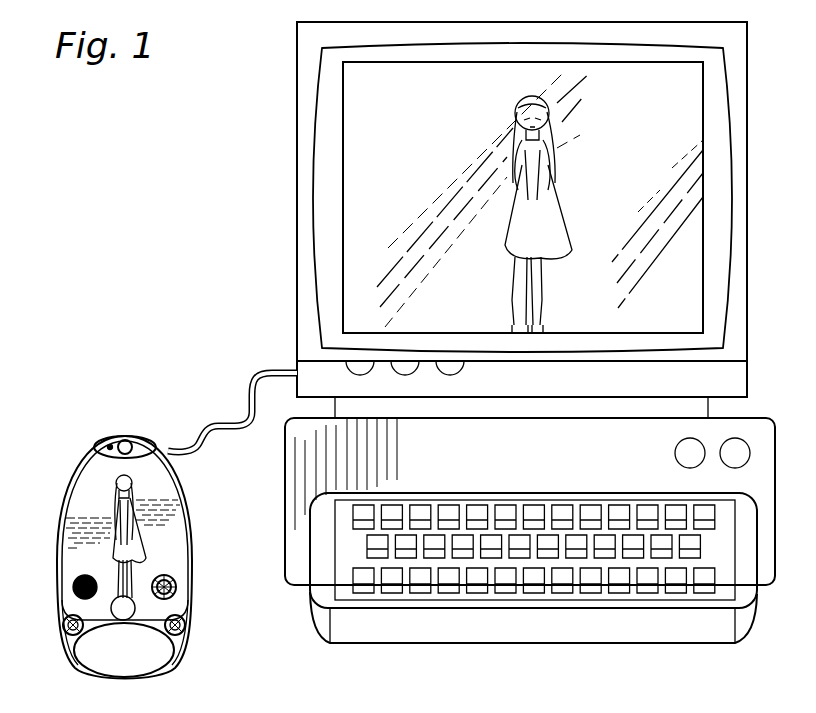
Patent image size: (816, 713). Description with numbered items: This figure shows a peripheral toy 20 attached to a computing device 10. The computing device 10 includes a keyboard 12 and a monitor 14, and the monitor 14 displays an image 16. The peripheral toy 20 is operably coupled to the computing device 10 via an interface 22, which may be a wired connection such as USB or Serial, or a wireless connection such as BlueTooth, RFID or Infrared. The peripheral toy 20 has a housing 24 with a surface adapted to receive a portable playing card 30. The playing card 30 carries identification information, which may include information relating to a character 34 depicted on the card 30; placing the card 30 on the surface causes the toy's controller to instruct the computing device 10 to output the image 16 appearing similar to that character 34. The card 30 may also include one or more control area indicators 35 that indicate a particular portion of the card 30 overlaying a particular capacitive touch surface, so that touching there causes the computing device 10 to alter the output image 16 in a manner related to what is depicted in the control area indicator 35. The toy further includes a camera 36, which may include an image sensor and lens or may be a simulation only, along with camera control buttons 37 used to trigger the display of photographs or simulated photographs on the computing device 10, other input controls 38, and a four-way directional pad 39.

The computing device 10 is at (524, 220).
The keyboard 12 is at (777, 428).
The monitor 14 is at (353, 184).
The image 16 is at (572, 235).
The peripheral toy 20 is at (130, 549).
The interface 22 is at (243, 388).
The housing 24 is at (192, 562).
The portable playing card 30 is at (165, 495).
The character 34 is at (148, 547).
The control area indicator 35 is at (72, 588).
The camera 36 is at (125, 436).
The camera control buttons 37 is at (150, 446).
The input controls 38 is at (62, 632).
The four-way directional pad 39 is at (147, 662).